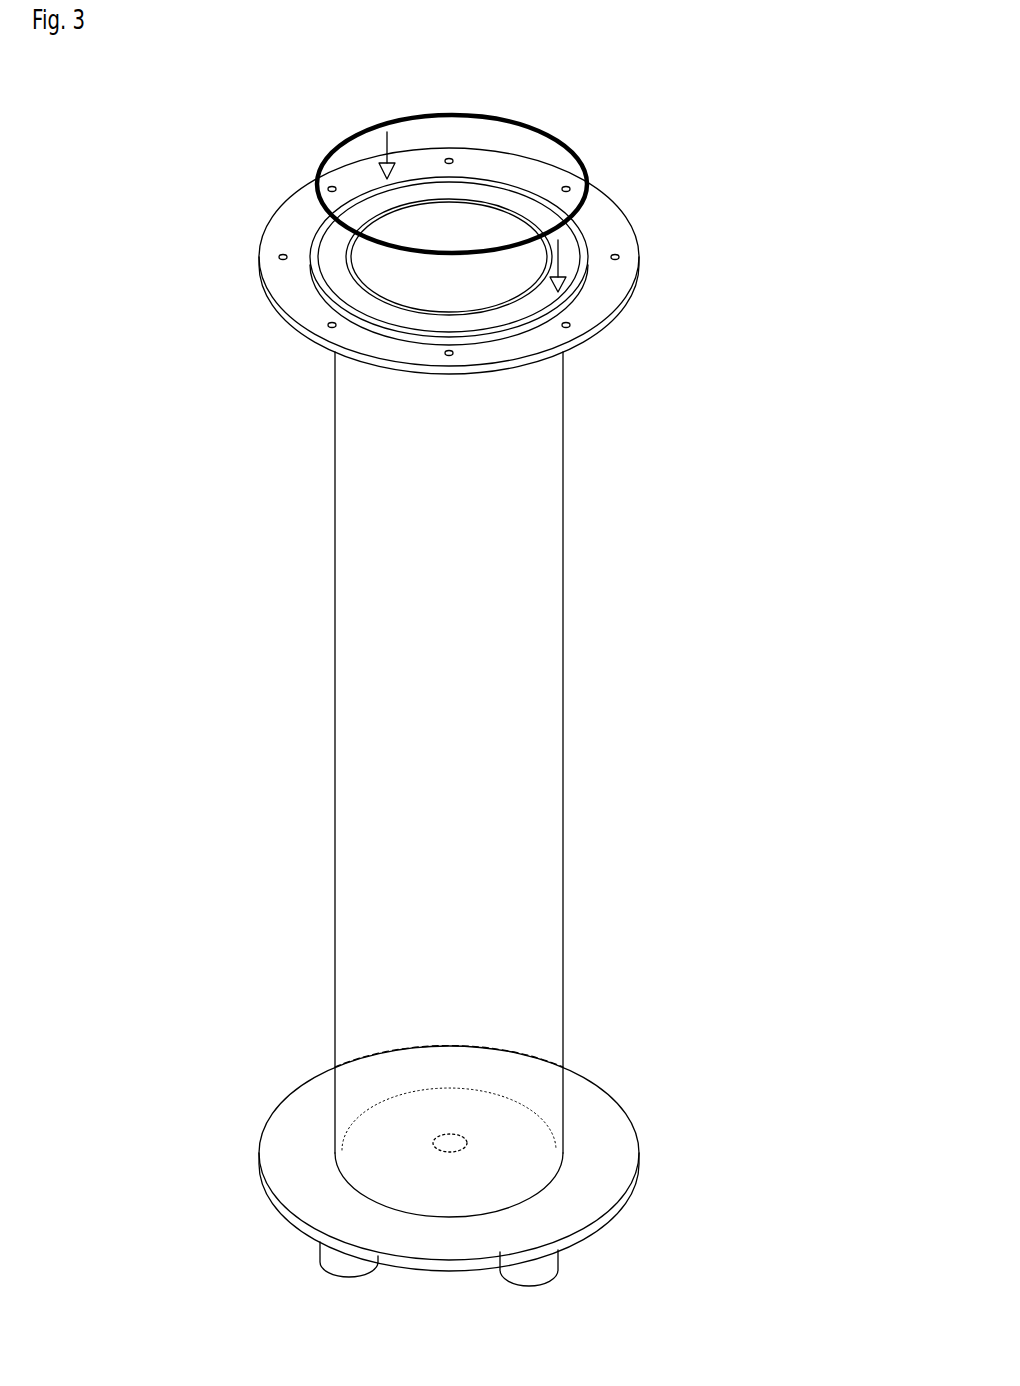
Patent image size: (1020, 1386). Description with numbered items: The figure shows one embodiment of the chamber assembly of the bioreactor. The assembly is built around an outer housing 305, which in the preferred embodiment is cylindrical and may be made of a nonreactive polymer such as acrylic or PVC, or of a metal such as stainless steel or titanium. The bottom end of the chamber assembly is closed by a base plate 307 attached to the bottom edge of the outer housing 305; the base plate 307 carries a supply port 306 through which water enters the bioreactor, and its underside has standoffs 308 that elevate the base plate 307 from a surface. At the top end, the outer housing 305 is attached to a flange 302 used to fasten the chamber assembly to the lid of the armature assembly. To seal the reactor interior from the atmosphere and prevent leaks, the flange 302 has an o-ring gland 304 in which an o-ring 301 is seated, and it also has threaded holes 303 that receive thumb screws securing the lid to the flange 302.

The o-ring 301 is at (562, 121).
The flange 302 is at (634, 204).
The threaded holes 303 is at (310, 322).
The o-ring gland 304 is at (595, 290).
The outer housing 305 is at (580, 576).
The supply port 306 is at (432, 1121).
The base plate 307 is at (654, 1127).
The standoffs 308 is at (307, 1275).